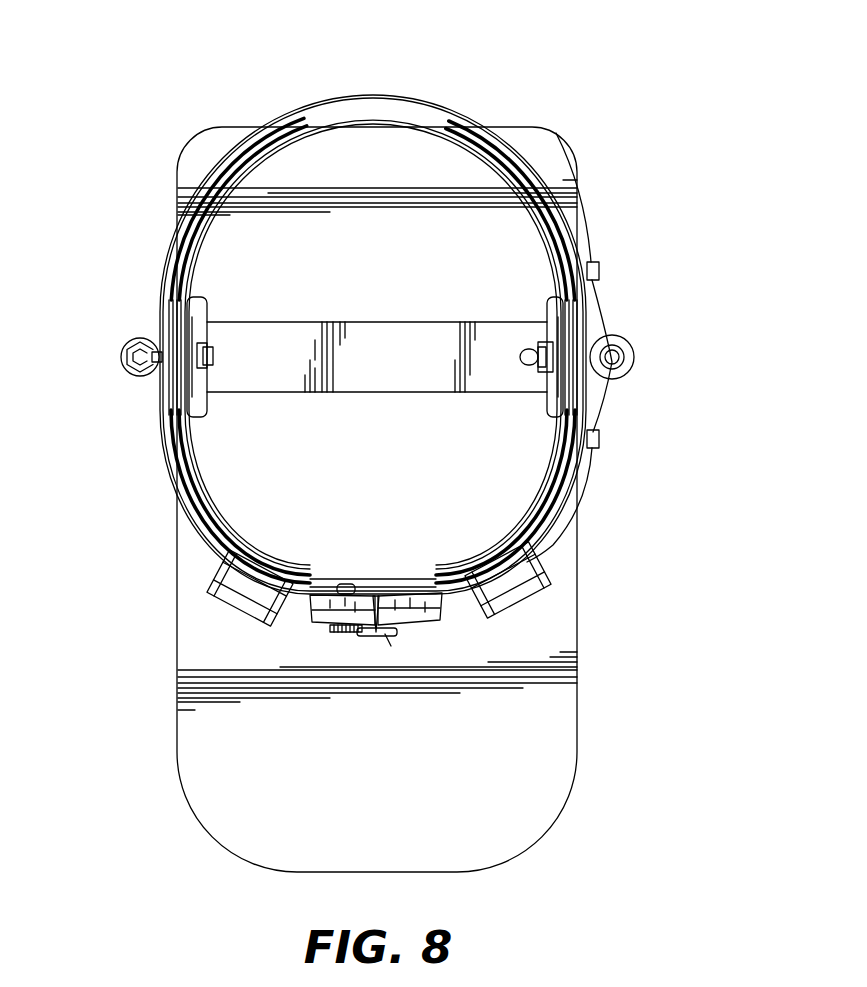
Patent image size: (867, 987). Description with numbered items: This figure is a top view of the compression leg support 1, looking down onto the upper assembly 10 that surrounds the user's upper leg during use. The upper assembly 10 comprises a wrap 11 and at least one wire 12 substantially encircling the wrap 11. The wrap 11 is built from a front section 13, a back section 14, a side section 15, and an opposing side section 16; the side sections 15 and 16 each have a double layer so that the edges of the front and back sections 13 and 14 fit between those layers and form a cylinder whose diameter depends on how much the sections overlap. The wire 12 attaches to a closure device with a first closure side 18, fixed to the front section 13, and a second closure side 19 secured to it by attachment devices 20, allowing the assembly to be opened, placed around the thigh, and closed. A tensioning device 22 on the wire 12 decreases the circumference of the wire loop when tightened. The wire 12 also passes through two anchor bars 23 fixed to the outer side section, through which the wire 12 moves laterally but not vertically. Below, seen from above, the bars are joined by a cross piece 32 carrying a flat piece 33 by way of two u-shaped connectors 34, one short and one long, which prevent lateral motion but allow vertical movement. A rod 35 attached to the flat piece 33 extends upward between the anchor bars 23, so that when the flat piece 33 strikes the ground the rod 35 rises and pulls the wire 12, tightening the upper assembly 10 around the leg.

The leg support 1 is at (683, 148).
The upper assembly 10 is at (203, 192).
The wrap 11 is at (213, 505).
The wire 12 is at (553, 545).
The front section 13 is at (375, 620).
The back section 14 is at (418, 115).
The side section 15 is at (535, 162).
The opposing side section 16 is at (173, 452).
The first closure side 18 is at (327, 620).
The second closure side 19 is at (433, 618).
The attachment device 20 is at (373, 632).
The tensioning device 22 is at (237, 603).
The anchor bar 23 is at (600, 272).
The cross piece 32 is at (409, 367).
The flat piece 33 is at (392, 812).
The u-shaped connector 34 is at (203, 308).
The rod 35 is at (624, 357).